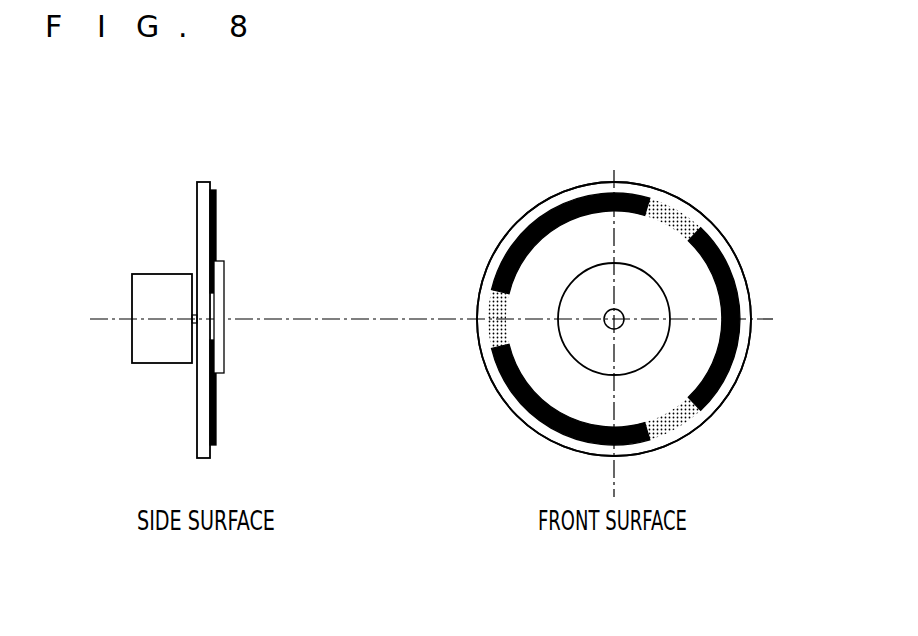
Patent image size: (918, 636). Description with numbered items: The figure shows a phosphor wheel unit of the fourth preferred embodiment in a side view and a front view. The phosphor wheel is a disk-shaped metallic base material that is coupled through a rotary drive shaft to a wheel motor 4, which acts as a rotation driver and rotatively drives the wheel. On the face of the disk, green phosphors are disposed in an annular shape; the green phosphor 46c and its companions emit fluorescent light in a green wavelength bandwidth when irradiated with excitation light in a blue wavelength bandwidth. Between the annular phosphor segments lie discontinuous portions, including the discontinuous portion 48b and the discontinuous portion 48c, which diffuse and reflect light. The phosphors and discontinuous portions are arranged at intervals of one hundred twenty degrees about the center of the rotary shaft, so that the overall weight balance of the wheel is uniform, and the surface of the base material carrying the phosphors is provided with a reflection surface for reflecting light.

The wheel motor 4 is at (143, 344).
The green phosphor 46c is at (738, 330).
The discontinuous portion 48b is at (675, 217).
The discontinuous portion 48c is at (672, 418).